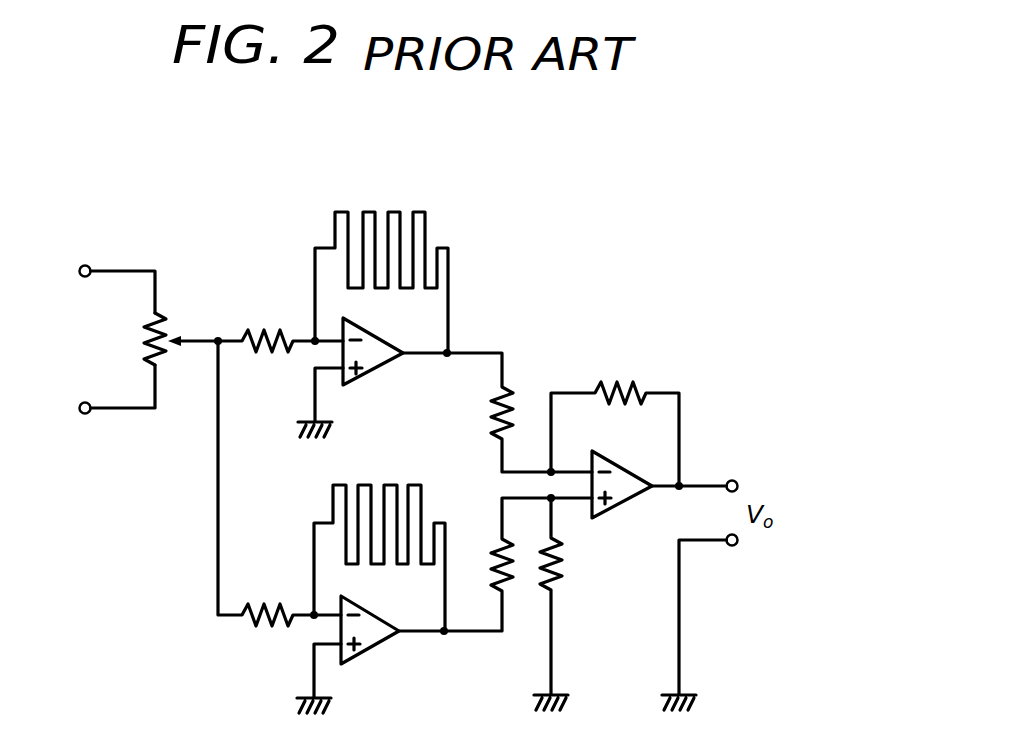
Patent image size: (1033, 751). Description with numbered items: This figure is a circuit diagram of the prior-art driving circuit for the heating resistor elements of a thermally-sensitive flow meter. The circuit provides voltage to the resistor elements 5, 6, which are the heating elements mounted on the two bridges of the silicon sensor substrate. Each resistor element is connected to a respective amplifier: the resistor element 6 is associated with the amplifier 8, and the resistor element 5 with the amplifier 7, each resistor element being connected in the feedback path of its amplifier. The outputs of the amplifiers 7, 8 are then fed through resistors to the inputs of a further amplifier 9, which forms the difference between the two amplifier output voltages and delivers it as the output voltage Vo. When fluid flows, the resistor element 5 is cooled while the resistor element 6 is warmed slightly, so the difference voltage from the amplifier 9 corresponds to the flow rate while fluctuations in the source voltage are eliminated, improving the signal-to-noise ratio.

The resistor element 5 is at (421, 503).
The resistor element 6 is at (425, 223).
The amplifier 7 is at (378, 645).
The amplifier 8 is at (378, 370).
The amplifier 9 is at (623, 502).